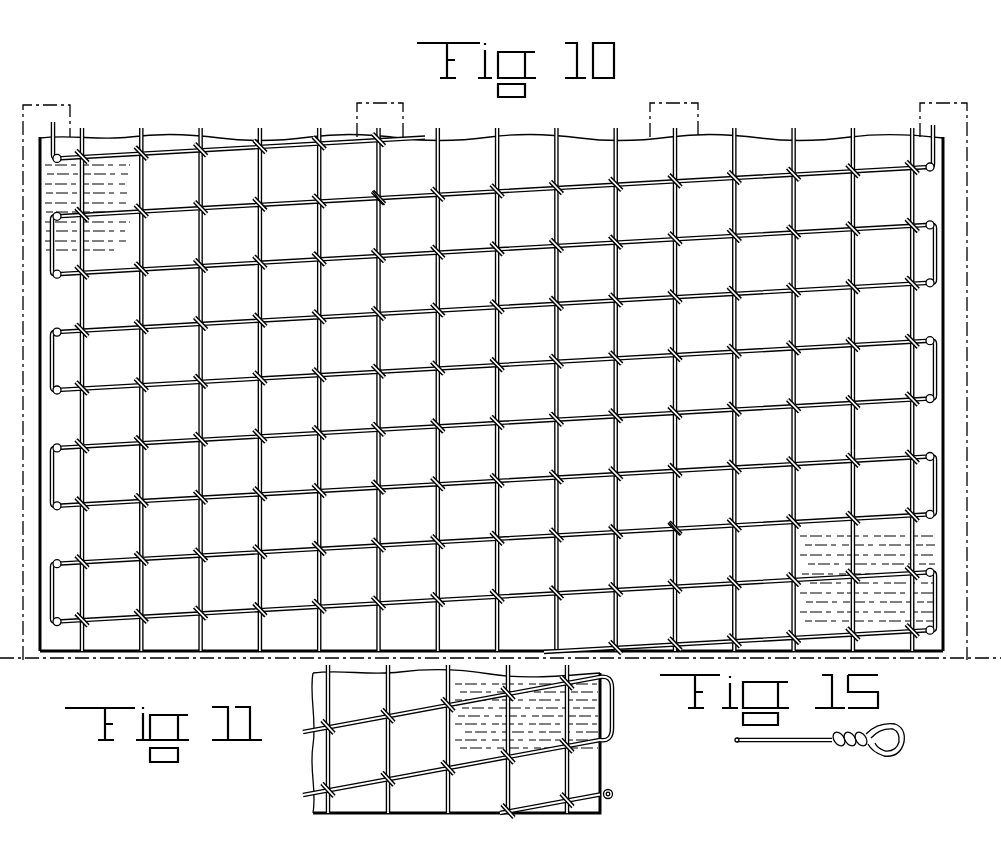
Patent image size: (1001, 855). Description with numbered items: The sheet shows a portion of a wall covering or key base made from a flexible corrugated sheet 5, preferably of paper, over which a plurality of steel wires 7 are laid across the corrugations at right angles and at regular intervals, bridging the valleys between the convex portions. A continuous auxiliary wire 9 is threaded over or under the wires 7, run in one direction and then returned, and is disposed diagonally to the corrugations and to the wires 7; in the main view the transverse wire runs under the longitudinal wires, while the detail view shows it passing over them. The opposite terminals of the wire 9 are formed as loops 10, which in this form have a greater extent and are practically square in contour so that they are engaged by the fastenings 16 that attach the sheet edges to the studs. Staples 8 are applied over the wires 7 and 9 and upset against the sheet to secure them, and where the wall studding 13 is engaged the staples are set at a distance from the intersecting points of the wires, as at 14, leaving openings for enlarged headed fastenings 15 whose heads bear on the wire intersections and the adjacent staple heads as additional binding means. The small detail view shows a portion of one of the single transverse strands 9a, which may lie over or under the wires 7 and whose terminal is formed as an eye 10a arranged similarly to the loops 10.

In FIG. 10, the corrugated sheet 5 is at (116, 148).
In FIG. 11, the corrugated sheet 5 is at (427, 739).
In FIG. 10, the wires 7 is at (192, 640).
In FIG. 11, the wires 7 is at (456, 741).
In FIG. 10, the staples 8 is at (791, 240).
In FIG. 11, the staples 8 is at (450, 772).
In FIG. 10, the auxiliary wire 9 is at (827, 165).
In FIG. 11, the auxiliary wire 9 is at (350, 782).
In FIG. 10, the loops 10 is at (497, 423).
In FIG. 11, the loops 10 is at (614, 720).
In FIG. 10, the wall studding 13 is at (962, 190).
In FIG. 10, the openings at a distance from intersecting points 14 is at (390, 203).
In FIG. 10, the enlarged headed fastenings 15 is at (374, 205).
In FIG. 10, the fastenings 16 is at (51, 506).
In FIG. 15, the single strands 9a is at (803, 746).
In FIG. 15, the eyes 10a is at (891, 753).